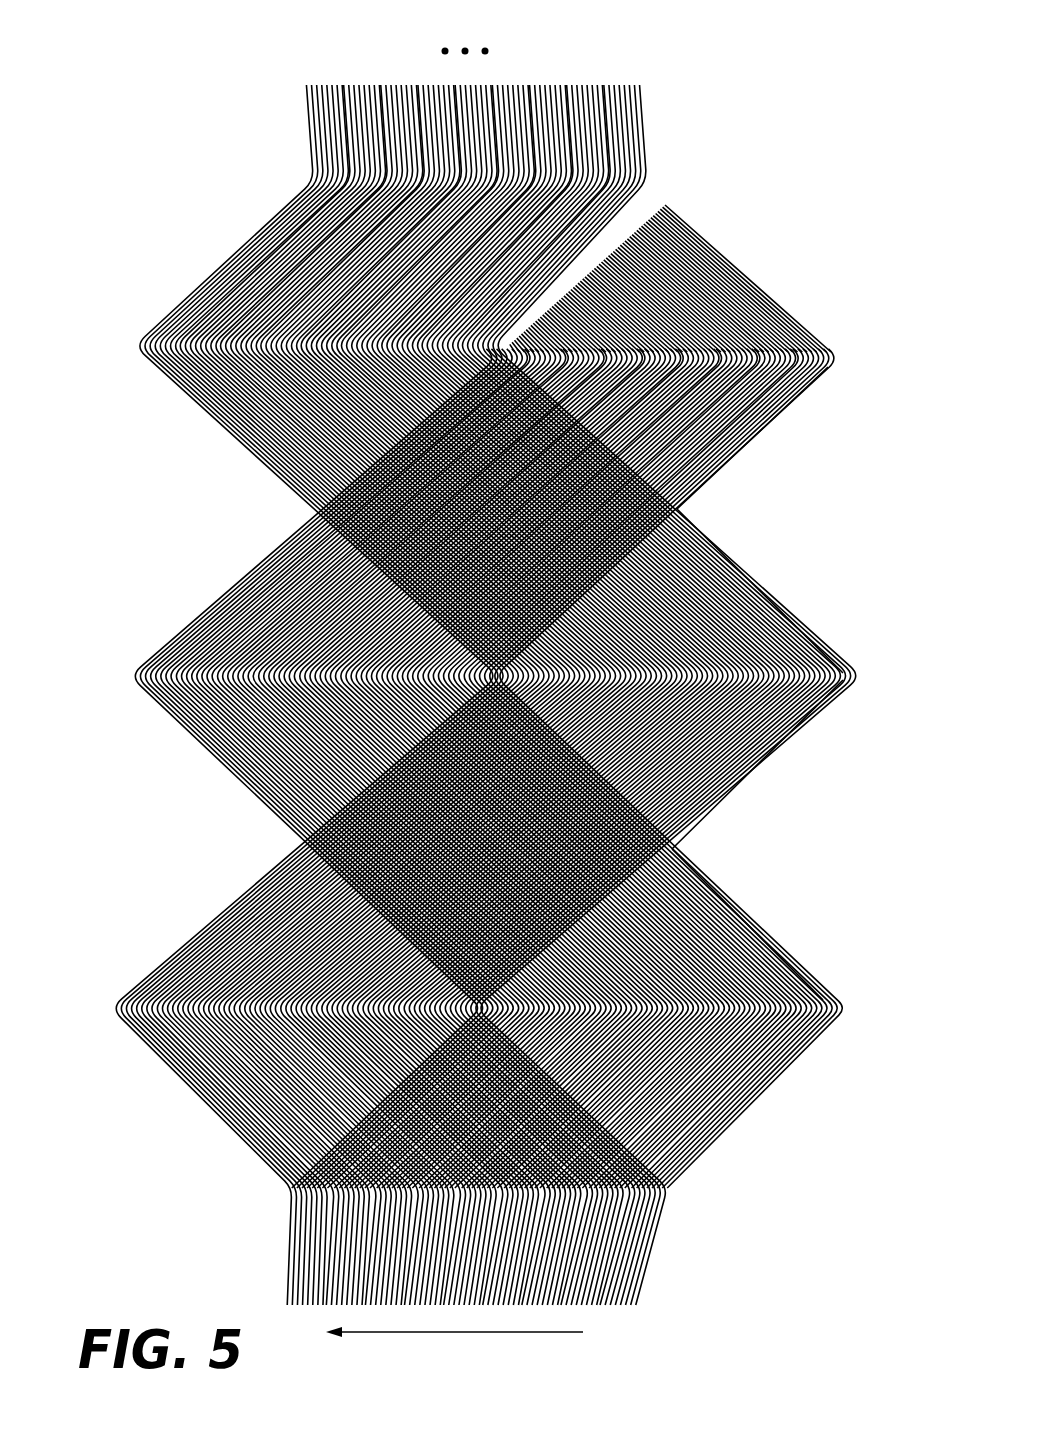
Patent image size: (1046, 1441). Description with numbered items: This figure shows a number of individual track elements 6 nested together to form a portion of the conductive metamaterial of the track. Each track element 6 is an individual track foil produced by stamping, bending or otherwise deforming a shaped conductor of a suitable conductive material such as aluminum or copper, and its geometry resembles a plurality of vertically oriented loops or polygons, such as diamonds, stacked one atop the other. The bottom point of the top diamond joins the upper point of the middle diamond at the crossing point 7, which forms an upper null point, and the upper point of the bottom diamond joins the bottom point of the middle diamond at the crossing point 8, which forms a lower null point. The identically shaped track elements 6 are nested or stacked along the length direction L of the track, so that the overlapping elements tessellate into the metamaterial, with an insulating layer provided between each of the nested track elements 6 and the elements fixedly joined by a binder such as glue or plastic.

The track element 6 is at (485, 661).
The crossing point 7 is at (674, 508).
The crossing point 8 is at (664, 835).
The length direction L is at (466, 1333).